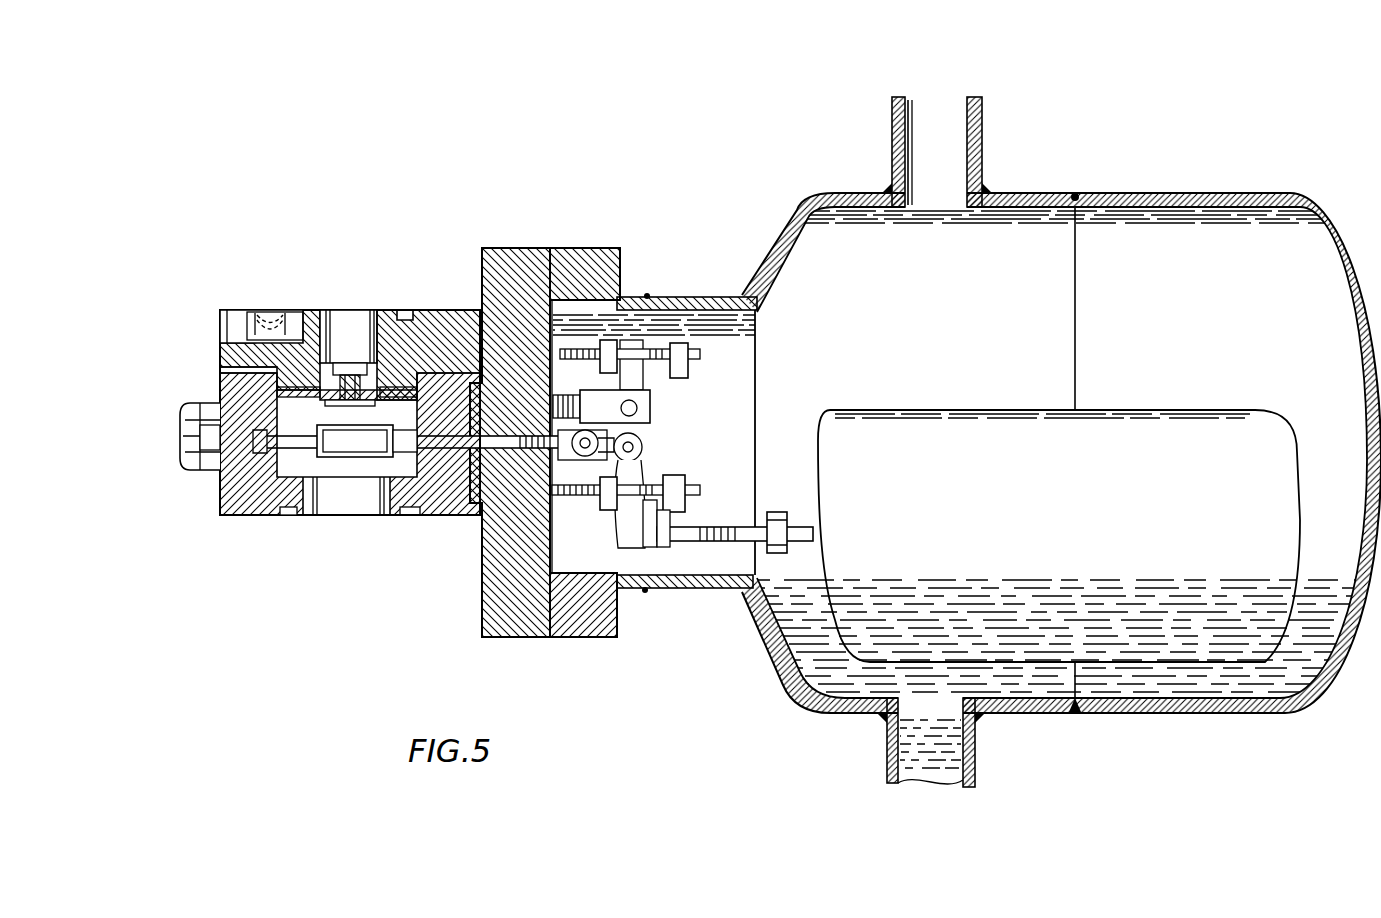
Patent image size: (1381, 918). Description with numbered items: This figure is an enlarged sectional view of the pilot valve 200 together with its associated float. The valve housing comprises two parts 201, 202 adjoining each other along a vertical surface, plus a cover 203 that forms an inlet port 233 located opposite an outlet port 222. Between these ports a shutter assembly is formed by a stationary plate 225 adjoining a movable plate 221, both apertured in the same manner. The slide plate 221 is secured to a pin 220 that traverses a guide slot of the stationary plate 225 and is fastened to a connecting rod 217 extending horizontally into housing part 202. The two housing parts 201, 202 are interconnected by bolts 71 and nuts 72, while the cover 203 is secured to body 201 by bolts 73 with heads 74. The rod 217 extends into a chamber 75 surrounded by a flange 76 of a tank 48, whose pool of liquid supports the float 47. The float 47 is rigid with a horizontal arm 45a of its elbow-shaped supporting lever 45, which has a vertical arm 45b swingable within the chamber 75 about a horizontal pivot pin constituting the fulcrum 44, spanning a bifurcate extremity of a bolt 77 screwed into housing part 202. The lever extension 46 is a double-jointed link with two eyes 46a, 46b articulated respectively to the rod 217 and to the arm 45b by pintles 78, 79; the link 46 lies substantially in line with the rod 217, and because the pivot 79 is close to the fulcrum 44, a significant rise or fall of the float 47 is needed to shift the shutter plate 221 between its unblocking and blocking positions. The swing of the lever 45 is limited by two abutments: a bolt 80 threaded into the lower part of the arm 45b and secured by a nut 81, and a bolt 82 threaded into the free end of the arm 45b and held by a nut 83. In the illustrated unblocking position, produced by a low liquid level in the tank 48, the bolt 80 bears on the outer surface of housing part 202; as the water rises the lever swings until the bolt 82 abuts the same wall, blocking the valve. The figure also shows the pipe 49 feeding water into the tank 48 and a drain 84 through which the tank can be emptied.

The pilot valve 200 is at (357, 222).
The inlet port 233 is at (353, 318).
The heads 74 is at (249, 312).
The pin 220 is at (310, 382).
The movable plate 221 is at (360, 372).
The cover 203 is at (450, 320).
The housing part 202 is at (510, 262).
The flange 76 is at (577, 262).
The chamber 75 is at (571, 605).
The bolt 82 is at (612, 347).
The nut 83 is at (660, 300).
The nut 81 is at (603, 565).
The pipe 49 is at (940, 112).
The drain 84 is at (975, 772).
The bolt 77 is at (575, 383).
The fulcrum 44 is at (640, 407).
The pintle 78 is at (637, 430).
The pintle 79 is at (650, 445).
The lever extension 46 is at (623, 508).
The eye 46a is at (587, 462).
The eye 46b is at (640, 449).
The supporting lever 45 is at (682, 525).
The horizontal arm 45a is at (740, 547).
The vertical arm 45b is at (662, 457).
The float 47 is at (1215, 422).
The tank 48 is at (1338, 655).
The bolt 80 is at (485, 590).
The connecting rod 217 is at (427, 517).
The outlet port 222 is at (327, 505).
The stationary plate 225 is at (264, 450).
The housing part 201 is at (223, 512).
The bolts 71 is at (187, 446).
The nuts 72 is at (201, 412).
The bolts 73 is at (252, 372).